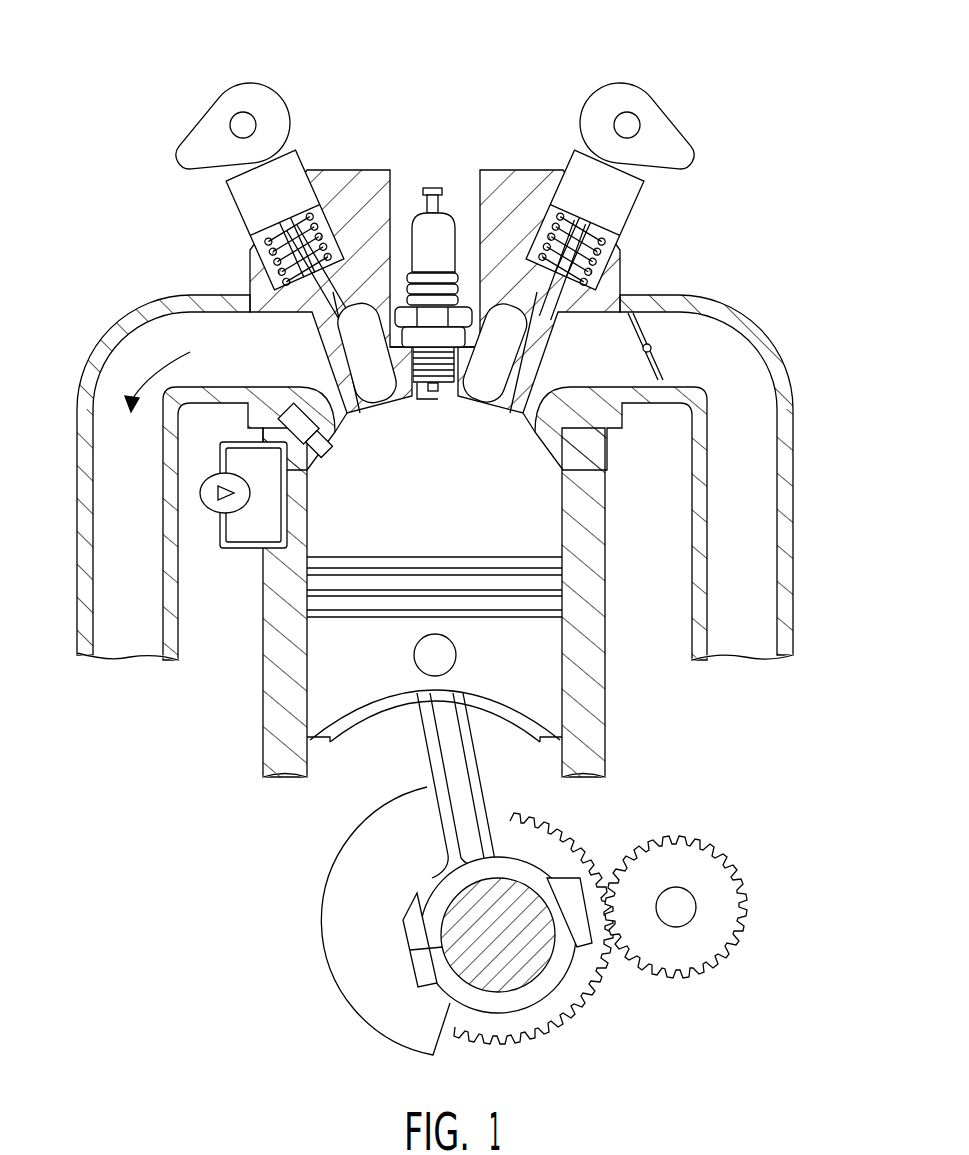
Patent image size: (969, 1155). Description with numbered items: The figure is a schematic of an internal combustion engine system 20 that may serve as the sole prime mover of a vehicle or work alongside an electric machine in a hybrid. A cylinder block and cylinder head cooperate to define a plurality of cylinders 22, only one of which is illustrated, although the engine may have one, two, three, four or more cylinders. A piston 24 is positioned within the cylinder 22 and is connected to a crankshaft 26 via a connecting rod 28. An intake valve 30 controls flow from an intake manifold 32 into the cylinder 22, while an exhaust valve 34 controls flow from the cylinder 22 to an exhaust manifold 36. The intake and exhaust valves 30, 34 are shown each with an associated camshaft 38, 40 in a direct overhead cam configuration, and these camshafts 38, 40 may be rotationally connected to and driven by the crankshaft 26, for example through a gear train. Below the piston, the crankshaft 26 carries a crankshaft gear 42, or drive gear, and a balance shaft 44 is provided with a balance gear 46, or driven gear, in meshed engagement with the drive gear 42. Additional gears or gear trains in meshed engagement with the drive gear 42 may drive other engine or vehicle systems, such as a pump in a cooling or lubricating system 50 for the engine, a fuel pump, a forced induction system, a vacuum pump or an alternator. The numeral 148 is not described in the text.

The internal combustion engine system 20 is at (458, 529).
The cylinder 22 is at (528, 520).
The piston 24 is at (492, 667).
The crankshaft 26 is at (440, 917).
The connecting rod 28 is at (437, 747).
The intake valve 30 is at (655, 236).
The intake manifold 32 is at (783, 300).
The exhaust valve 34 is at (215, 232).
The exhaust manifold 36 is at (135, 300).
The camshaft 38 is at (627, 123).
The camshaft 40 is at (243, 125).
The crankshaft gear 42 is at (577, 840).
The balance shaft 44 is at (688, 907).
The balance gear 46 is at (715, 927).
The cooling or lubricating system 50 is at (246, 548).
The fuel pump 148 is at (216, 515).